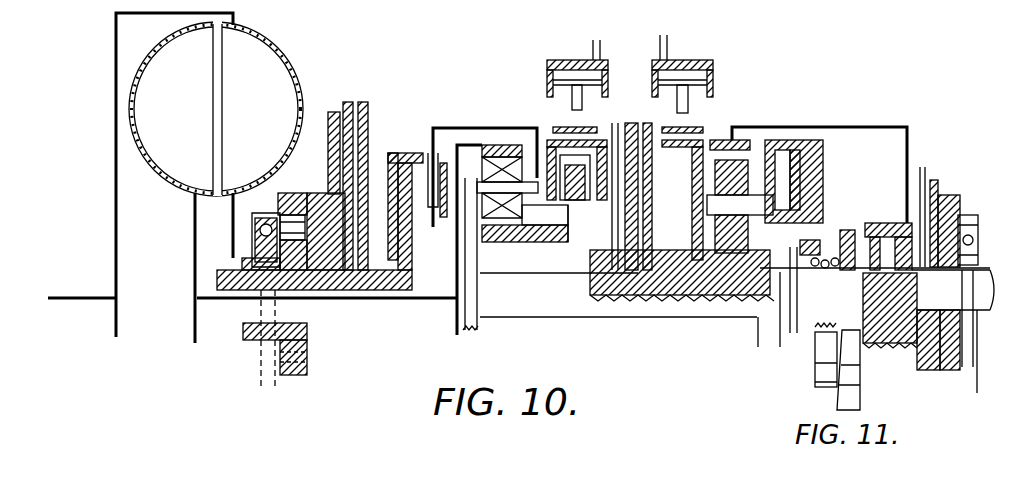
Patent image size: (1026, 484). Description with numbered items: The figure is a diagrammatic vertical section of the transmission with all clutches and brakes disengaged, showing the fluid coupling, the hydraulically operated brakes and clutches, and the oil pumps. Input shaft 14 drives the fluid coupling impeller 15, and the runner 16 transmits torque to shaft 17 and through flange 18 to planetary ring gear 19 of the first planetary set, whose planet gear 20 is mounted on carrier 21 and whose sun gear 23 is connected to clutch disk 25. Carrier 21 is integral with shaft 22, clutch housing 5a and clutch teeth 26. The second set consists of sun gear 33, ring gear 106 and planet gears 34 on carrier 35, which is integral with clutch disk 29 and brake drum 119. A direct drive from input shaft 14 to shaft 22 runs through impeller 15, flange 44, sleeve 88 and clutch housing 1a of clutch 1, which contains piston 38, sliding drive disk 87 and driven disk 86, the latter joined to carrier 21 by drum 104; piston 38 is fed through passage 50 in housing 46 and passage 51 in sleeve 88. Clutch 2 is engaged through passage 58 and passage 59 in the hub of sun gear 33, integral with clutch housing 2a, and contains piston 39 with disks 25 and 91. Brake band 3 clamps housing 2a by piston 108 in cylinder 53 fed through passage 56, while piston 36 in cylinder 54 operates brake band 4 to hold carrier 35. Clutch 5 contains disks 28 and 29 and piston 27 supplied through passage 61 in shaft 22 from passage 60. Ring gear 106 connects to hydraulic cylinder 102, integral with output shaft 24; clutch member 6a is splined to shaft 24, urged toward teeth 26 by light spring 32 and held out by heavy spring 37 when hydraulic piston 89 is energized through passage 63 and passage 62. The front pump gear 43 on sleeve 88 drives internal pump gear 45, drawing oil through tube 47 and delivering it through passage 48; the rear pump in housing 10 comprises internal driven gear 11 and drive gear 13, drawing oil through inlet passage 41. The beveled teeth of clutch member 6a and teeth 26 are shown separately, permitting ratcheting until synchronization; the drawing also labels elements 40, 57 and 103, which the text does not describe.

In FIG. 10, the direct drive clutch 1 is at (394, 155).
In FIG. 10, the clutch housing 1a is at (389, 176).
In FIG. 10, the clutch 2 is at (576, 154).
In FIG. 10, the clutch housing 2a is at (575, 157).
In FIG. 10, the brake band 3 is at (576, 120).
In FIG. 10, the brake band 4 is at (683, 183).
In FIG. 10, the clutch 5 is at (824, 152).
In FIG. 10, the clutch housing 5a is at (746, 127).
In FIG. 10, the clutch member 6a is at (828, 252).
In FIG. 11, the clutch member 6a is at (818, 388).
In FIG. 10, the rear oil pump housing 10 is at (936, 180).
In FIG. 10, the internal driven oil pump gear 11 is at (952, 208).
In FIG. 10, the drive gear 13 is at (968, 225).
In FIG. 10, the input shaft 14 is at (92, 296).
In FIG. 10, the fluid coupling impeller 15 is at (257, 34).
In FIG. 10, the runner 16 is at (172, 36).
In FIG. 10, the shaft 17 is at (201, 302).
In FIG. 10, the flange 18 is at (457, 260).
In FIG. 10, the planetary ring gear 19 is at (494, 144).
In FIG. 10, the planet gear 20 is at (536, 144).
In FIG. 10, the carrier 21 is at (507, 193).
In FIG. 10, the shaft 22 is at (498, 338).
In FIG. 10, the sun gear 23 is at (520, 243).
In FIG. 10, the output shaft 24 is at (796, 336).
In FIG. 10, the clutch disk 25 is at (545, 215).
In FIG. 10, the clutch teeth 26 is at (842, 230).
In FIG. 11, the clutch teeth 26 is at (854, 406).
In FIG. 10, the piston 27 is at (822, 172).
In FIG. 10, the drive disk 28 is at (795, 150).
In FIG. 10, the clutch disk 29 is at (782, 150).
In FIG. 10, the light spring 32 is at (791, 309).
In FIG. 10, the sun gear 33 is at (722, 300).
In FIG. 10, the planet gear 34 is at (714, 178).
In FIG. 10, the carrier 35 is at (740, 206).
In FIG. 10, the piston 36 is at (690, 76).
In FIG. 10, the heavy spring 37 is at (848, 296).
In FIG. 10, the piston 38 is at (400, 152).
In FIG. 10, the piston 39 is at (616, 120).
In FIG. 10, the ball bearing 40 is at (252, 218).
In FIG. 10, the inlet passage 41 is at (960, 372).
In FIG. 10, the front oil pump gear 43 is at (242, 256).
In FIG. 10, the flange 44 is at (194, 207).
In FIG. 10, the internal pump gear 45 is at (278, 208).
In FIG. 10, the housing 46 is at (328, 168).
In FIG. 10, the tube 47 is at (275, 378).
In FIG. 10, the passage 48 is at (342, 100).
In FIG. 10, the passage 50 is at (362, 100).
In FIG. 10, the passage 51 is at (380, 300).
In FIG. 10, the cylinder 53 is at (572, 60).
In FIG. 10, the cylinder 54 is at (652, 64).
In FIG. 10, the passage 56 is at (594, 50).
In FIG. 10, the solenoid leads 57 is at (670, 42).
In FIG. 10, the passage 58 is at (628, 122).
In FIG. 10, the passage 59 is at (618, 295).
In FIG. 10, the passage 60 is at (650, 180).
In FIG. 10, the passage 61 is at (668, 306).
In FIG. 10, the passage 62 is at (926, 166).
In FIG. 10, the passage 63 is at (890, 310).
In FIG. 10, the driven disk 86 is at (434, 152).
In FIG. 10, the sliding drive disk 87 is at (442, 218).
In FIG. 10, the sleeve 88 is at (216, 276).
In FIG. 10, the hydraulic piston 89 is at (900, 228).
In FIG. 10, the driven disk 91 is at (576, 239).
In FIG. 10, the hydraulic cylinder 102 is at (869, 222).
In FIG. 10, the housing cover 103 is at (840, 126).
In FIG. 10, the drum 104 is at (470, 126).
In FIG. 10, the ring gear 106 is at (752, 126).
In FIG. 10, the piston 108 is at (547, 80).
In FIG. 10, the brake drum 119 is at (720, 128).